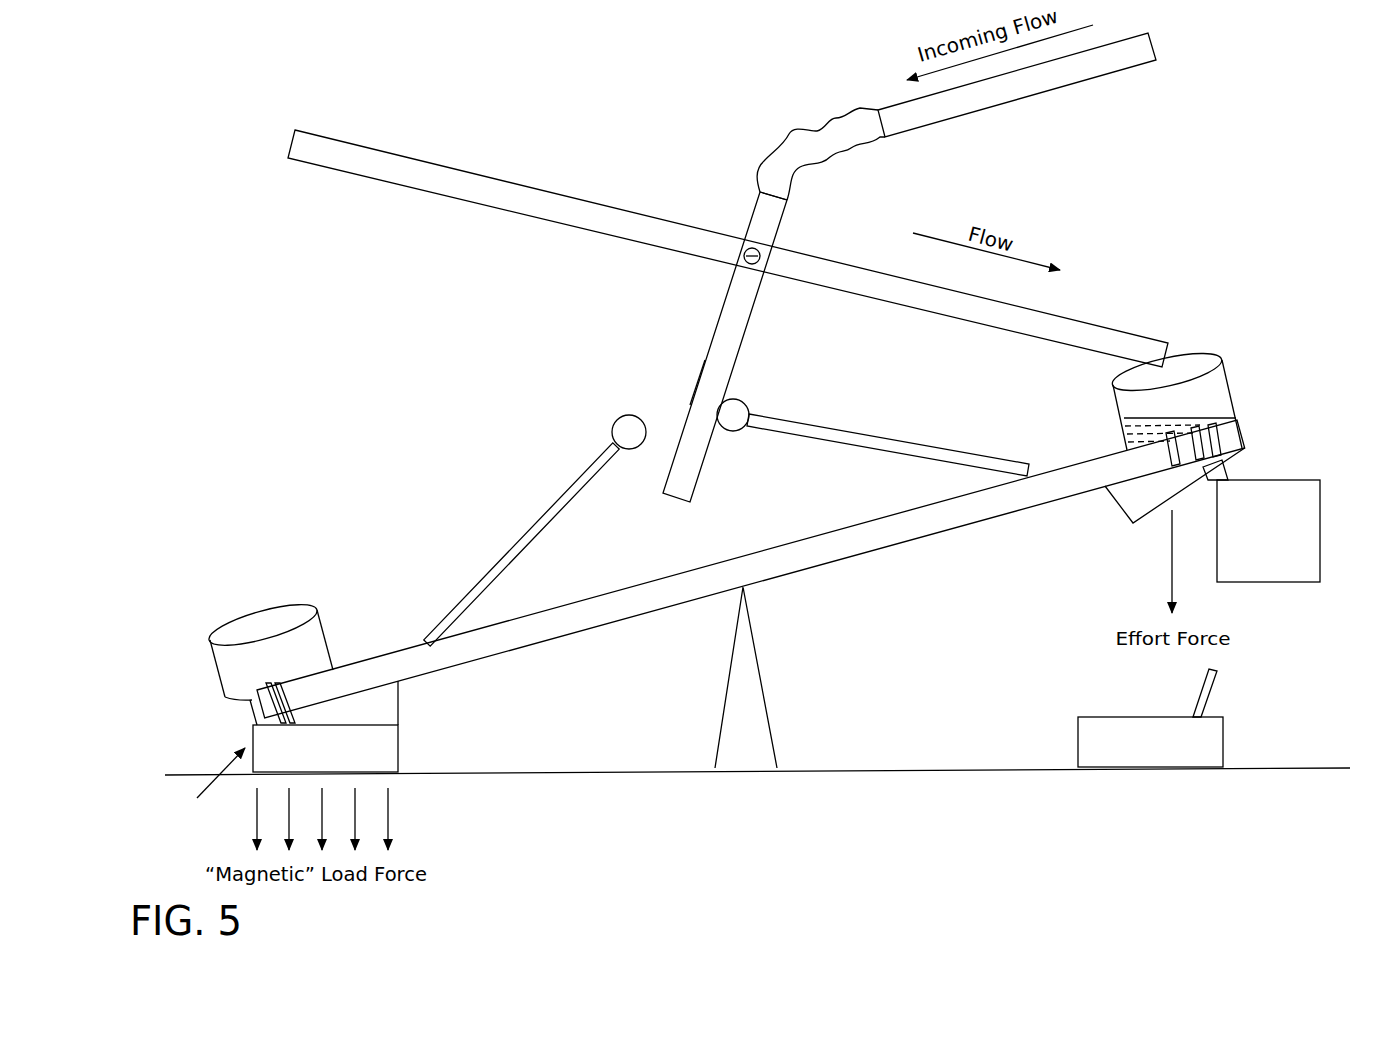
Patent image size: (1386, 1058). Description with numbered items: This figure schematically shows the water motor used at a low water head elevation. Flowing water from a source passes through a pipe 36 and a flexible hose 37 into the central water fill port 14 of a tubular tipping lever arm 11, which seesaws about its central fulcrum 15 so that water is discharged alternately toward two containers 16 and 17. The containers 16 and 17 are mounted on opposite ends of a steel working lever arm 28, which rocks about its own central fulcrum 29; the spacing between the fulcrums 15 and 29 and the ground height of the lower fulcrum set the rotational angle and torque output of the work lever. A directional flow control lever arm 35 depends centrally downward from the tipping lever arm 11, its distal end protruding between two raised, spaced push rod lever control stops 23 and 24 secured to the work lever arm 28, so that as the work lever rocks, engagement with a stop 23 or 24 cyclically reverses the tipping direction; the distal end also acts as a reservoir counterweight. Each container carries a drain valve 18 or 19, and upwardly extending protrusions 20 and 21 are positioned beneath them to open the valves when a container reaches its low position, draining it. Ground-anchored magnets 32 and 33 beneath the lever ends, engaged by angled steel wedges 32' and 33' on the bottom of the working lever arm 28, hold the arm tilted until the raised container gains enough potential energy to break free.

The tipping lever arm 11 is at (335, 138).
The central water fill port 14 is at (765, 221).
The central fulcrum 15 is at (745, 257).
The container 16 is at (268, 625).
The container 17 is at (1210, 388).
The drain valve 18 is at (243, 712).
The drain valve 19 is at (1272, 562).
The upwardly extending protrusion 20 is at (206, 782).
The upwardly extending protrusion 21 is at (1213, 687).
The push rod lever control stop 23 is at (527, 530).
The push rod lever control stop 24 is at (870, 441).
The working lever arm 28 is at (929, 534).
The central fulcrum 29 is at (758, 712).
The magnet 32 is at (369, 748).
The steel wedge 32' is at (442, 703).
The magnet 33 is at (1187, 742).
The steel wedge 33' is at (1151, 491).
The directional flow control lever arm 35 is at (707, 349).
The pipe 36 is at (1160, 48).
The flexible hose 37 is at (781, 151).